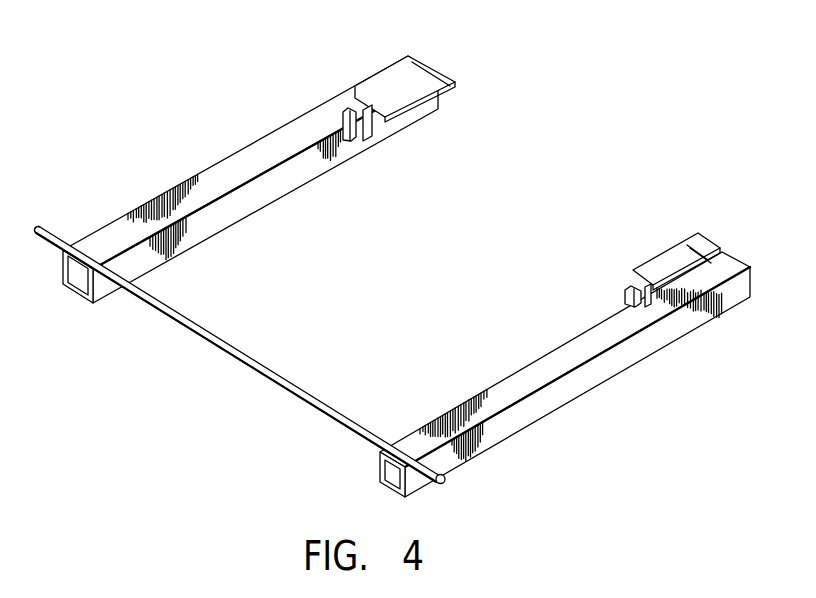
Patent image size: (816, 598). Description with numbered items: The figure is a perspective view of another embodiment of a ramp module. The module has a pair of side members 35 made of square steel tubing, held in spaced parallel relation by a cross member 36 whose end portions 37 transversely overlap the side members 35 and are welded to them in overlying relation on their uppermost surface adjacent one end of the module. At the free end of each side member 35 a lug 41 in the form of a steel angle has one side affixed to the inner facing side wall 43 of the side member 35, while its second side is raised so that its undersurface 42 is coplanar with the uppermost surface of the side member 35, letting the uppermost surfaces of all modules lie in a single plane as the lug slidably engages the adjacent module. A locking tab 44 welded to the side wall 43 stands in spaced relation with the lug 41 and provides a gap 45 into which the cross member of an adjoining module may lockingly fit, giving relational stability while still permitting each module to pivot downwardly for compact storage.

The side member 35 is at (585, 380).
The cross member 36 is at (248, 355).
The end portion 37 is at (47, 229).
The lug 41 is at (701, 240).
The undersurface 42 is at (632, 278).
The inner facing side wall 43 is at (275, 180).
The locking tab 44 is at (343, 111).
The gap 45 is at (362, 108).